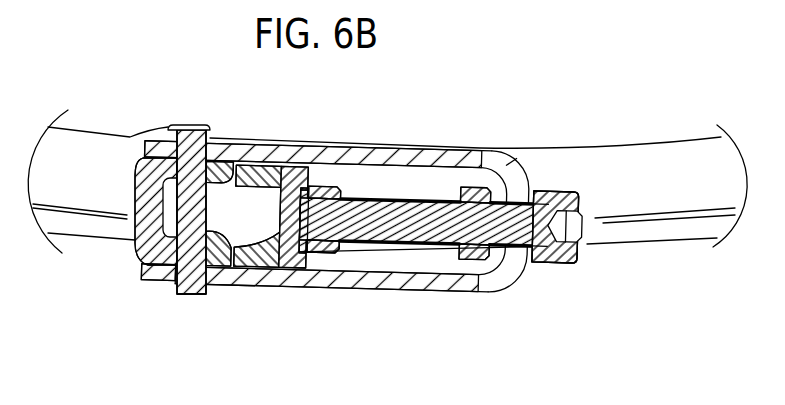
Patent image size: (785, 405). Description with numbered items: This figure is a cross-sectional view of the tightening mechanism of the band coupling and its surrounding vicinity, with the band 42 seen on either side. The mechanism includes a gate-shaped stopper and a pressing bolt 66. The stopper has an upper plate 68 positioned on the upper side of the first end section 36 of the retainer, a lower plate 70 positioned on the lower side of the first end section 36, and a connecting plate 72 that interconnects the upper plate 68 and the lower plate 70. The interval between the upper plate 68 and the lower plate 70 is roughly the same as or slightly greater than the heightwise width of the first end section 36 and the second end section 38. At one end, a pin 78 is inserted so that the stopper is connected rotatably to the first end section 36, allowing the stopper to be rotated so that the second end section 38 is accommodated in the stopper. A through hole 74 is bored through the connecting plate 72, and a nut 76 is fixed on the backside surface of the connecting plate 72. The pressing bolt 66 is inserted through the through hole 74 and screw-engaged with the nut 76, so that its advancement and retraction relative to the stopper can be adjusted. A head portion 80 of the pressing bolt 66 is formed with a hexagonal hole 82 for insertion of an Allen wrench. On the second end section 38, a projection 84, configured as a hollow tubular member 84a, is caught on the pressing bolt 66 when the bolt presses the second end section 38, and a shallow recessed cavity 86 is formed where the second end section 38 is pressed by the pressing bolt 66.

The first end section 36 is at (148, 255).
The second end section 38 is at (240, 256).
The band 42 is at (97, 147).
The pressing bolt 66 is at (387, 245).
The upper plate 68 is at (334, 150).
The lower plate 70 is at (348, 281).
The connecting plate 72 is at (525, 190).
The through hole 74 is at (510, 249).
The nut 76 is at (472, 187).
The pin 78 is at (186, 125).
The head portion 80 is at (581, 203).
The hexagonal hole 82 is at (572, 227).
The projection 84 is at (320, 252).
The hollow tubular member 84a is at (306, 315).
The recessed cavity 86 is at (318, 186).